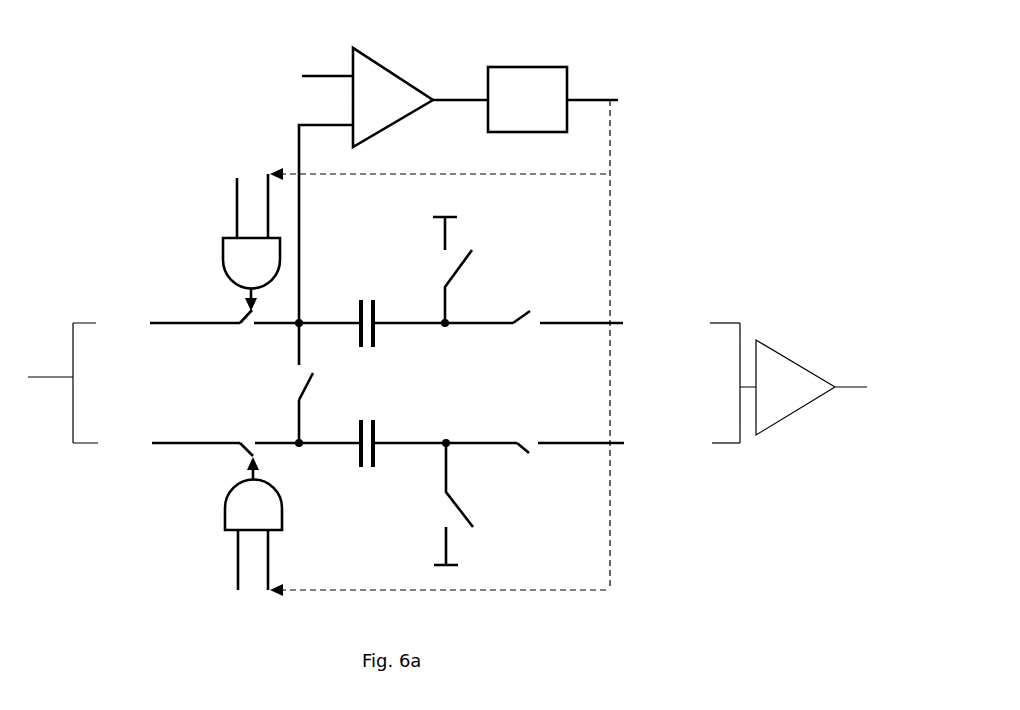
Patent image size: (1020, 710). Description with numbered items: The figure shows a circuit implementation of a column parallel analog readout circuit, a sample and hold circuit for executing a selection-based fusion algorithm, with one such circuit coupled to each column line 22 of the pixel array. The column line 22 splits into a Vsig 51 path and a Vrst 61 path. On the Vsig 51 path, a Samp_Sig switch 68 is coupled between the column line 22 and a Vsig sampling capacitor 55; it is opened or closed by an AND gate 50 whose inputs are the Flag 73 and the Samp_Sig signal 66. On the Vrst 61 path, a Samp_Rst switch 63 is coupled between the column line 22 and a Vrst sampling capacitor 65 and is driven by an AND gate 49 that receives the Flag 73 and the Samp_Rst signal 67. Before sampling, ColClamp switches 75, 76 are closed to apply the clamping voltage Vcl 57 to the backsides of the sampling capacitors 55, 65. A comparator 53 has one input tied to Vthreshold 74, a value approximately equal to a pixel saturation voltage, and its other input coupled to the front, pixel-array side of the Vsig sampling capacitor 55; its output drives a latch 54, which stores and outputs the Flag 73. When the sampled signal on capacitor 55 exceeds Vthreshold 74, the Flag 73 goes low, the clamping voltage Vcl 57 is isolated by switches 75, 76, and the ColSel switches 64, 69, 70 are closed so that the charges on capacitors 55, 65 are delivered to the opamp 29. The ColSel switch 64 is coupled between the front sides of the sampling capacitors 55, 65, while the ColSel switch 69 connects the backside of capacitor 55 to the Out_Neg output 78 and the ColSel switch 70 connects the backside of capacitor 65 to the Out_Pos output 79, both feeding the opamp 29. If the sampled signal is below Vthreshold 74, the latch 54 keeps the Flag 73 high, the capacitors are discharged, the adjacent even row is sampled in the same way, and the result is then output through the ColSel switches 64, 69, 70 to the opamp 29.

The column line 22 is at (72, 377).
The output amplifier 29 is at (790, 362).
The AND gate 49 is at (283, 512).
The AND gate 50 is at (223, 265).
The Vsig 51 is at (138, 322).
The comparator 53 is at (412, 77).
The latch 54 is at (565, 70).
The Vsig sampling capacitor 55 is at (374, 340).
The clamping voltage Vcl 57 is at (457, 205).
The Vrst 61 is at (140, 443).
The Samp_Rst switch 63 is at (247, 457).
The ColSel switch 64 is at (265, 398).
The Vrst sampling capacitor 65 is at (385, 442).
The Samp_Sig signal 66 is at (170, 186).
The Samp_Rst signal 67 is at (200, 595).
The Samp_Sig switch 68 is at (246, 329).
The ColSel switch 69 is at (522, 275).
The ColSel switch 70 is at (522, 488).
The Flag 73 is at (665, 103).
The Vthreshold 74 is at (275, 66).
The ColClamp switch 75 is at (392, 250).
The ColClamp switch 76 is at (395, 525).
The Out_Neg output 78 is at (636, 305).
The Out_Pos output 79 is at (650, 452).